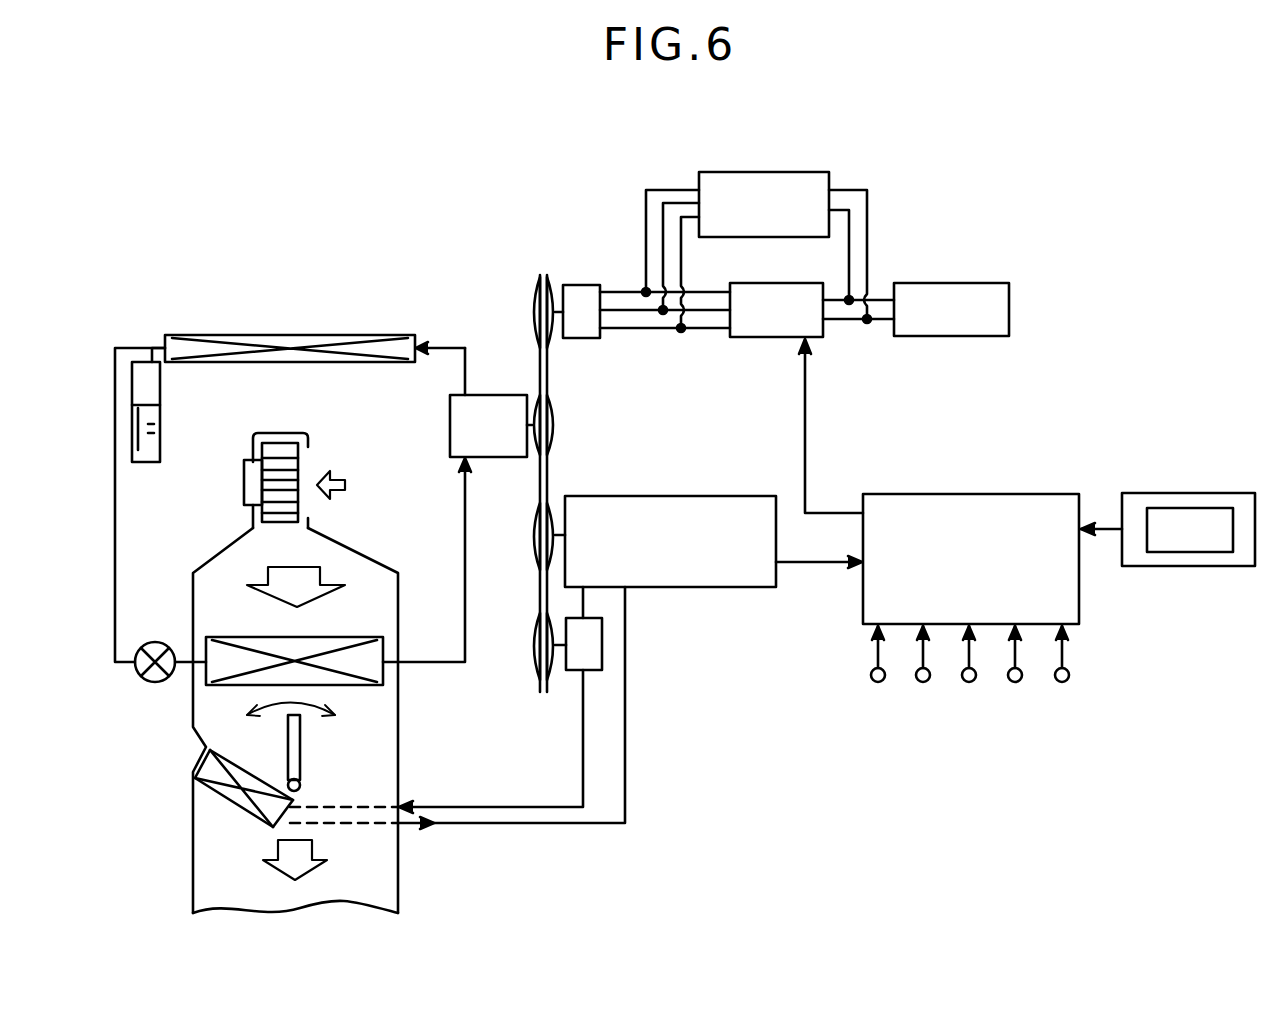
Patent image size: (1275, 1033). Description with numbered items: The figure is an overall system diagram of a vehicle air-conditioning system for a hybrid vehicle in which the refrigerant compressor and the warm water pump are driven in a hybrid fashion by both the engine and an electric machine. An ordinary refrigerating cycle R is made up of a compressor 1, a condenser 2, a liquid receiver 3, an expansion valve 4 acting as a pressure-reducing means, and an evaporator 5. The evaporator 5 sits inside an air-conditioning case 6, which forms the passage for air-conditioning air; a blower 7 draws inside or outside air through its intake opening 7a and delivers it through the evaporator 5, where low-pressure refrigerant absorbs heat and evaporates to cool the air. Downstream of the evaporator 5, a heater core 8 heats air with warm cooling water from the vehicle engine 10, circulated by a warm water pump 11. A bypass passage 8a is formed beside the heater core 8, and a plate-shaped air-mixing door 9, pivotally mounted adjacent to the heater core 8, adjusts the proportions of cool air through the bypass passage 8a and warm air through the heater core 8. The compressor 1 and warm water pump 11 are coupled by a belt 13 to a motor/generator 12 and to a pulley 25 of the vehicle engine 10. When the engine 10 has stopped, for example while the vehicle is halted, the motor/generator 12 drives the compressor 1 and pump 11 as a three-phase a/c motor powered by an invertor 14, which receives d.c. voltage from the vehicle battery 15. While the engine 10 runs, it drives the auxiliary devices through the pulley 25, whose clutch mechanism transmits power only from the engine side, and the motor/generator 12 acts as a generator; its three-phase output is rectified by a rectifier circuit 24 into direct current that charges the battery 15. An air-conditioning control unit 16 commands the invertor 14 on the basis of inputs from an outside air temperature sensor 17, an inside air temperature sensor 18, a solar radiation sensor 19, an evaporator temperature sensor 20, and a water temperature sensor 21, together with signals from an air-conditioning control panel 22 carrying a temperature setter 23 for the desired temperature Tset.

The compressor 1 is at (492, 395).
The condenser 2 is at (216, 335).
The liquid receiver 3 is at (160, 420).
The expansion valve 4 is at (148, 684).
The evaporator 5 is at (228, 688).
The air-conditioning case 6 is at (193, 597).
The blower 7 is at (273, 487).
The intake opening 7a is at (307, 463).
The heater core 8 is at (222, 800).
The bypass passage 8a is at (355, 793).
The air-mixing door 9 is at (303, 775).
The vehicle engine 10 is at (740, 496).
The warm water pump 11 is at (572, 672).
The motor/generator 12 is at (575, 285).
The belt 13 is at (550, 368).
The invertor 14 is at (755, 338).
The vehicle battery 15 is at (982, 283).
The air-conditioning control unit 16 is at (1058, 494).
The outside air temperature sensor 17 is at (878, 682).
The inside air temperature sensor 18 is at (923, 682).
The solar radiation sensor 19 is at (969, 682).
The evaporator temperature sensor 20 is at (1015, 682).
The water temperature sensor 21 is at (1062, 682).
The air-conditioning control panel 22 is at (1212, 493).
The temperature setter 23 is at (1212, 552).
The rectifier circuit 24 is at (776, 172).
The pulley 25 is at (565, 496).
The refrigerating cycle R is at (416, 326).